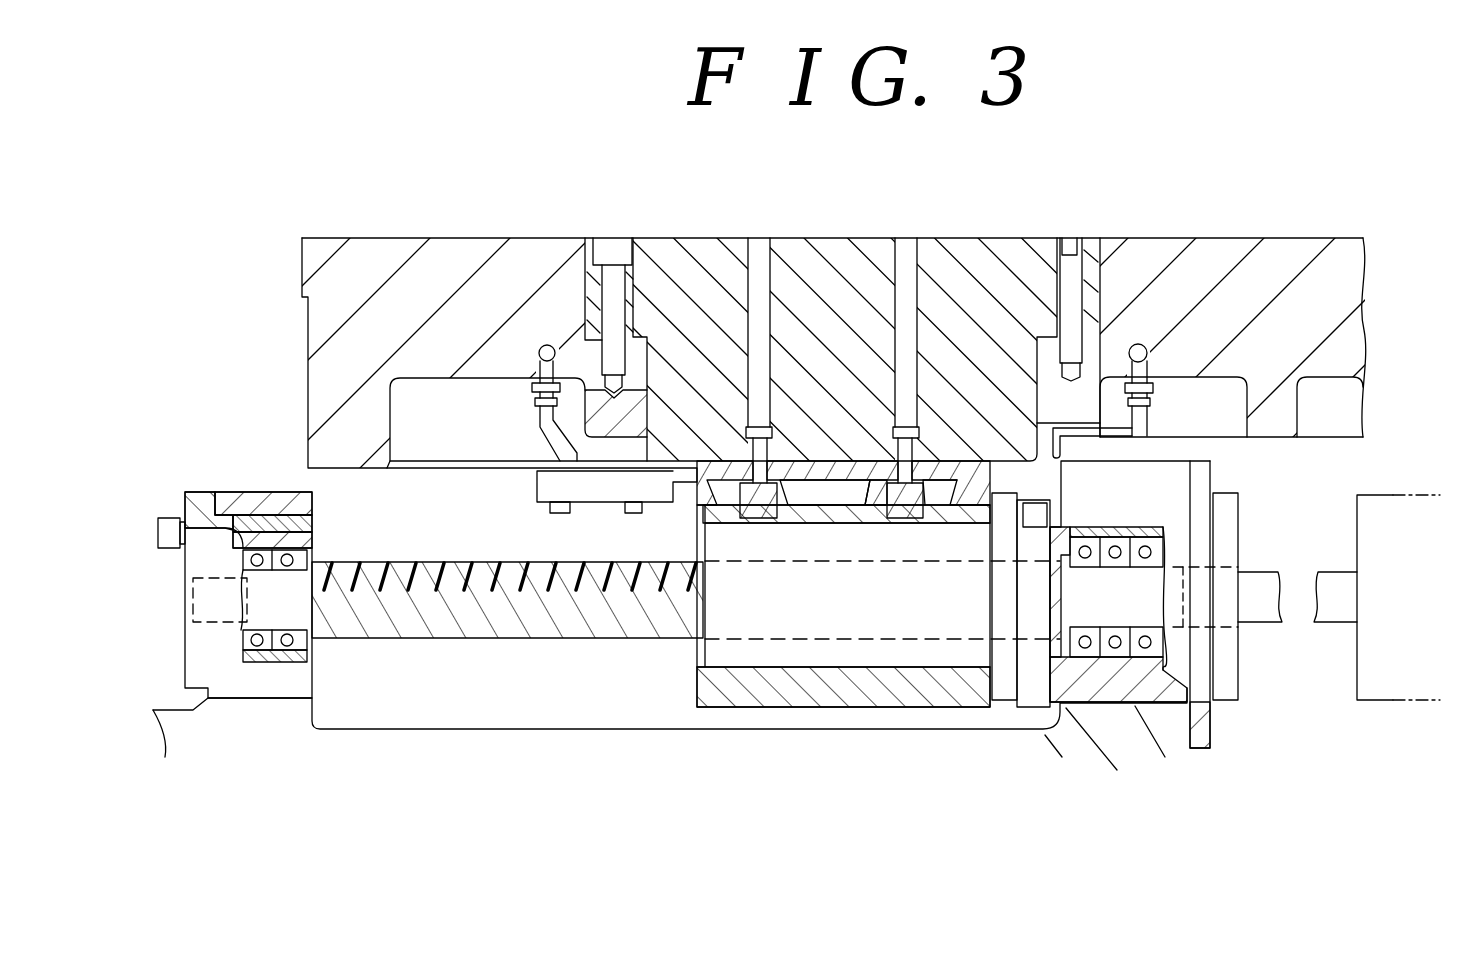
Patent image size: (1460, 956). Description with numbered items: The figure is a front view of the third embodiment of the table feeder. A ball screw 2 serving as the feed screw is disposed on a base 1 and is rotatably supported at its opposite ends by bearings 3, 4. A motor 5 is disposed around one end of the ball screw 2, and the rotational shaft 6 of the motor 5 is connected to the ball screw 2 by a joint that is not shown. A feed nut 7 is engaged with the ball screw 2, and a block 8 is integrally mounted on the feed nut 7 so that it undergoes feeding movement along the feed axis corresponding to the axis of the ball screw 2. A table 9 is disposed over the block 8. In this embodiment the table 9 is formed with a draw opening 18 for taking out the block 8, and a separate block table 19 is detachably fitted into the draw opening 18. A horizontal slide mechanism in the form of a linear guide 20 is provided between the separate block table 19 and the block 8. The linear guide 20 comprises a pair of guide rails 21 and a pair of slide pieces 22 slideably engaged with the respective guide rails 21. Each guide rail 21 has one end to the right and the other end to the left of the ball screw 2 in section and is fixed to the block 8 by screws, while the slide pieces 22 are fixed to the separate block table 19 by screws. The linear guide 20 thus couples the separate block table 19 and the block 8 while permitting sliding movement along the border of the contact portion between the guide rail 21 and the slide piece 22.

The base 1 is at (548, 723).
The ball screw 2 is at (434, 632).
The bearing 3 is at (1112, 658).
The bearing 4 is at (265, 650).
The motor 5 is at (1380, 690).
The rotational shaft 6 is at (1342, 620).
The feed nut 7 is at (787, 657).
The block 8 is at (938, 707).
The table 9 is at (1225, 250).
The draw opening 18 is at (1037, 337).
The separate block table 19 is at (668, 238).
The linear guide 20 is at (832, 483).
The guide rail 21 is at (763, 518).
The slide piece 22 is at (723, 490).